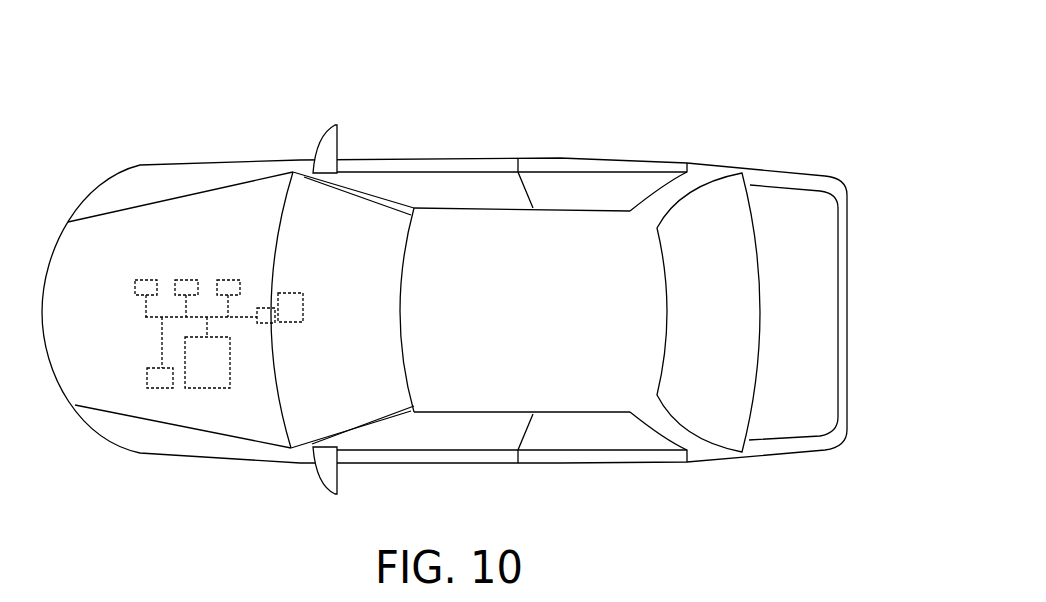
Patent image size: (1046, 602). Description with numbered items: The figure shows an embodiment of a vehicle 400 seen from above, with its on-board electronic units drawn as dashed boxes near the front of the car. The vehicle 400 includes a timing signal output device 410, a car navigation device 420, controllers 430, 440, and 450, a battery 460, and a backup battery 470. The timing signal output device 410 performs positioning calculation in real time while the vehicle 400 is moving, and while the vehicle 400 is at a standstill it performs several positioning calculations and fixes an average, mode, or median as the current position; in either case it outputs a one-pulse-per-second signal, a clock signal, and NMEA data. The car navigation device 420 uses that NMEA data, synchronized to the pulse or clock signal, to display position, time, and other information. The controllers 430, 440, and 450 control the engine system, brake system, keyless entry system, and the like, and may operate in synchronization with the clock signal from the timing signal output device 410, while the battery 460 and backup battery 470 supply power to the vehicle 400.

The vehicle 400 is at (472, 84).
The timing signal output device 410 is at (262, 324).
The car navigation device 420 is at (288, 292).
The controller 430 is at (143, 279).
The controller 440 is at (184, 279).
The controller 450 is at (230, 279).
The battery 460 is at (217, 389).
The backup battery 470 is at (147, 380).